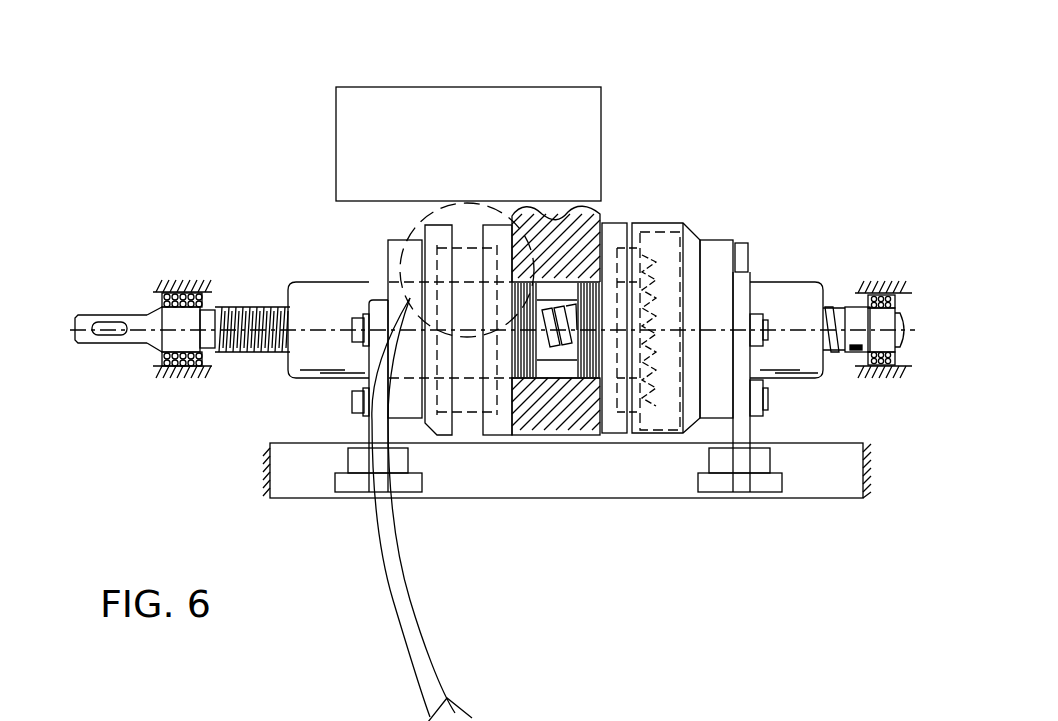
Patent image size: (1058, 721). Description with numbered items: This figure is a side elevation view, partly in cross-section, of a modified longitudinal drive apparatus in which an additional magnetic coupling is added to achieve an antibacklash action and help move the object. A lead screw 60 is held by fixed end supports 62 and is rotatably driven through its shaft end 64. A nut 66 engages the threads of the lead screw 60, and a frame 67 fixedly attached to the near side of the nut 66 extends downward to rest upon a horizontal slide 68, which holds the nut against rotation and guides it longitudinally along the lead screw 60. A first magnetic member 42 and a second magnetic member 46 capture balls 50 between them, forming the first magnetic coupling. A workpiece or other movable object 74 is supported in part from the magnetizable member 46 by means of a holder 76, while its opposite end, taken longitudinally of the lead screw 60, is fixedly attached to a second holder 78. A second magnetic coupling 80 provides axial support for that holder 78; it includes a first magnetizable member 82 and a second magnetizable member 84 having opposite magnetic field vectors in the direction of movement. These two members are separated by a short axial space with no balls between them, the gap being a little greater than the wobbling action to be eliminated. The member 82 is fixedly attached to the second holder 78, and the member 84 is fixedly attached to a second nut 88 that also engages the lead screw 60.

The first magnetic member 42 is at (668, 258).
The second magnetic member 46 is at (625, 225).
The balls 50 is at (650, 257).
The lead screw 60 is at (830, 300).
The end supports 62 is at (200, 303).
The shaft end 64 is at (98, 310).
The nut 66 is at (708, 290).
The frame 67 is at (750, 430).
The horizontal slide 68 is at (813, 485).
The workpiece 74 is at (445, 125).
The holder 76 is at (610, 432).
The second holder 78 is at (507, 228).
The second magnetic coupling 80 is at (467, 432).
The first magnetizable member 82 is at (480, 228).
The second magnetizable member 84 is at (438, 227).
The second nut 88 is at (400, 258).